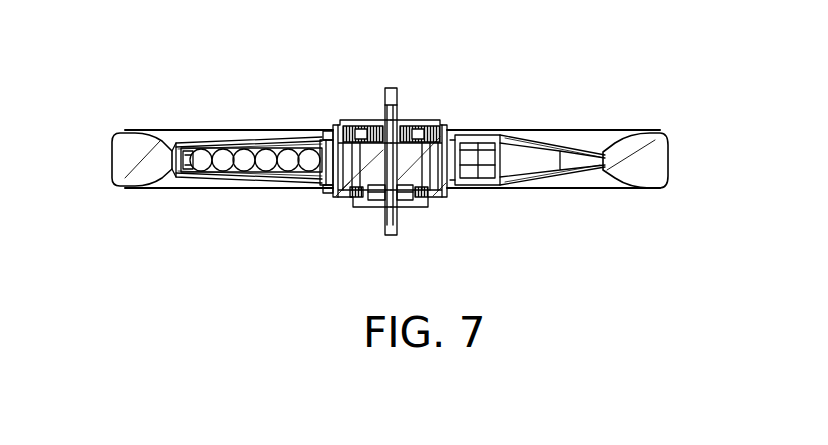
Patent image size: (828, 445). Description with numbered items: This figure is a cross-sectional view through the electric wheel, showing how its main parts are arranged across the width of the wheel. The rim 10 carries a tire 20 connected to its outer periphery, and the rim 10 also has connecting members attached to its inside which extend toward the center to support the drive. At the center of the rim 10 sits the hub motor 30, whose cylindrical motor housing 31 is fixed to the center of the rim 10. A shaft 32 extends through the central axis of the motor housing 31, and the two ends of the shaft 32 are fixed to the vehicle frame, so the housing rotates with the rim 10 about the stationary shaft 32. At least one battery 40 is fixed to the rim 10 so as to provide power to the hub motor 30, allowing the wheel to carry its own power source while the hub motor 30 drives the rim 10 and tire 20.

The rim 10 is at (613, 165).
The tire 20 is at (650, 162).
The hub motor 30 is at (423, 207).
The motor housing 31 is at (338, 197).
The shaft 32 is at (397, 102).
The battery 40 is at (271, 143).